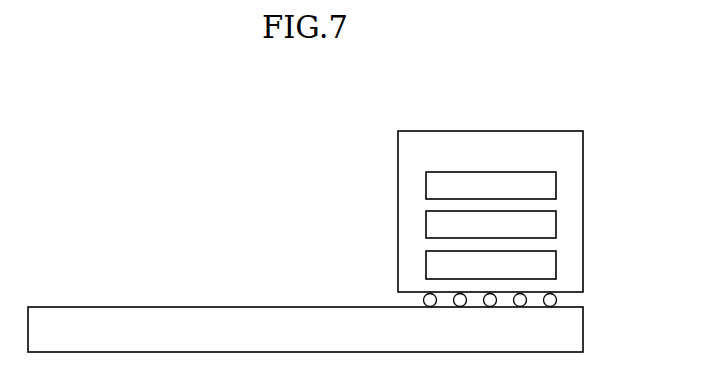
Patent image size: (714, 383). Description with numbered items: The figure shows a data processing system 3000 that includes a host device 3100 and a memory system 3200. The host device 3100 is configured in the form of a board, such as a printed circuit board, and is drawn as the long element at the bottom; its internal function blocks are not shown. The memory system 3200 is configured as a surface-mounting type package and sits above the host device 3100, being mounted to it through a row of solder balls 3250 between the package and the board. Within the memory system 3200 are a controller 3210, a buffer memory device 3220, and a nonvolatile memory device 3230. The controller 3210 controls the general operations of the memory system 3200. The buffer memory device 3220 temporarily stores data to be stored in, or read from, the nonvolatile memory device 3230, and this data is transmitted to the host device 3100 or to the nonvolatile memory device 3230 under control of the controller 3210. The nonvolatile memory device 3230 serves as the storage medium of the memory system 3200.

The data processing system 3000 is at (98, 104).
The host device 3100 is at (305, 329).
The memory system 3200 is at (490, 211).
The controller 3210 is at (491, 185).
The buffer memory device 3220 is at (491, 224).
The nonvolatile memory device 3230 is at (491, 265).
The solder balls 3250 is at (562, 300).